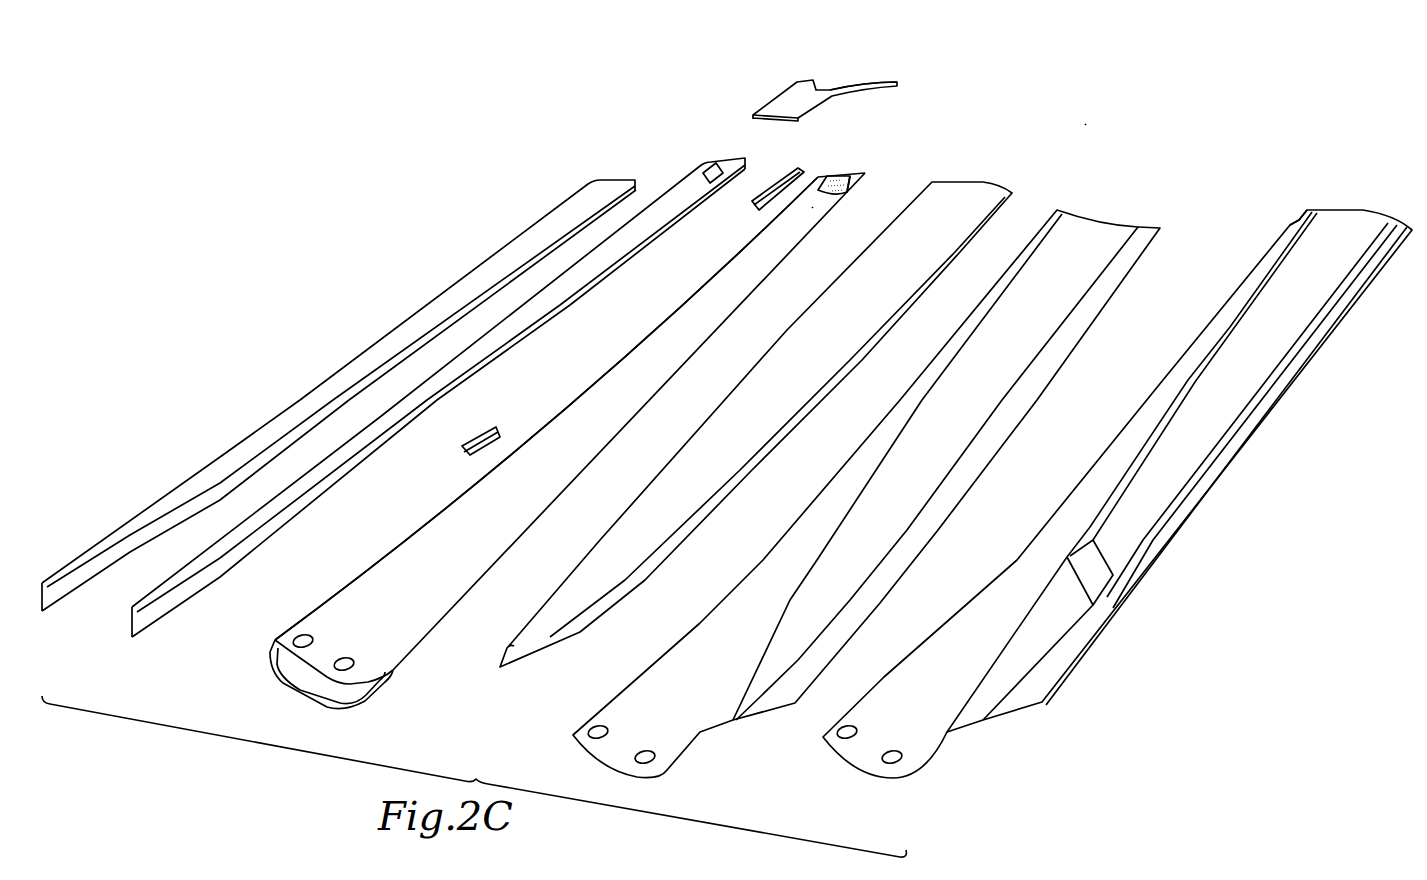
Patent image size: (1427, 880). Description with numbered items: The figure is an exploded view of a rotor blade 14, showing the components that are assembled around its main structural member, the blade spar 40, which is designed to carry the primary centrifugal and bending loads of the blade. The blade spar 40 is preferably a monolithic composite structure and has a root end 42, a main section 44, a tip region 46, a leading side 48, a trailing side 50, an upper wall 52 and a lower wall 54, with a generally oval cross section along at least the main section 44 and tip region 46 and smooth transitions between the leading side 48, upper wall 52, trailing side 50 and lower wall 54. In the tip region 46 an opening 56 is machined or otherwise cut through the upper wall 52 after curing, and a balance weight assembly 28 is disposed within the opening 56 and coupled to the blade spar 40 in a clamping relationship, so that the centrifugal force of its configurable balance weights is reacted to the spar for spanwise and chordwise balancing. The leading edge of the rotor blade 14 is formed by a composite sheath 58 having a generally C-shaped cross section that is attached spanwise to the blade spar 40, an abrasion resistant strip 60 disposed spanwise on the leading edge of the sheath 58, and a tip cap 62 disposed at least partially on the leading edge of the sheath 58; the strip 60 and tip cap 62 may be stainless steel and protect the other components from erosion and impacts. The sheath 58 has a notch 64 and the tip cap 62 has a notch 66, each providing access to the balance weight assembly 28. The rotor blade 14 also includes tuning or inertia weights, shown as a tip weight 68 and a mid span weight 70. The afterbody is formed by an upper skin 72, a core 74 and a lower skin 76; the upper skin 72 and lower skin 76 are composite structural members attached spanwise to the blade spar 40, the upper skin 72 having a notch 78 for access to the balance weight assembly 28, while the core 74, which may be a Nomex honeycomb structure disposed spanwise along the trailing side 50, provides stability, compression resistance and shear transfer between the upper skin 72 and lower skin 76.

The rotor blade 14 is at (1085, 125).
The balance weight assembly 28 is at (836, 175).
The blade spar 40 is at (586, 439).
The root end 42 is at (387, 652).
The main section 44 is at (605, 393).
The tip region 46 is at (813, 207).
The leading side 48 is at (650, 331).
The trailing side 50 is at (675, 372).
The upper wall 52 is at (721, 284).
The lower wall 54 is at (367, 690).
The opening 56 is at (848, 186).
The composite sheath 58 is at (363, 447).
The abrasion resistant strip 60 is at (375, 352).
The tip cap 62 is at (783, 100).
The notch 64 is at (717, 163).
The notch 66 is at (832, 80).
The tip weight 68 is at (770, 190).
The mid span weight 70 is at (481, 425).
The upper skin 72 is at (1117, 469).
The core 74 is at (756, 424).
The lower skin 76 is at (866, 494).
The notch 78 is at (1294, 224).